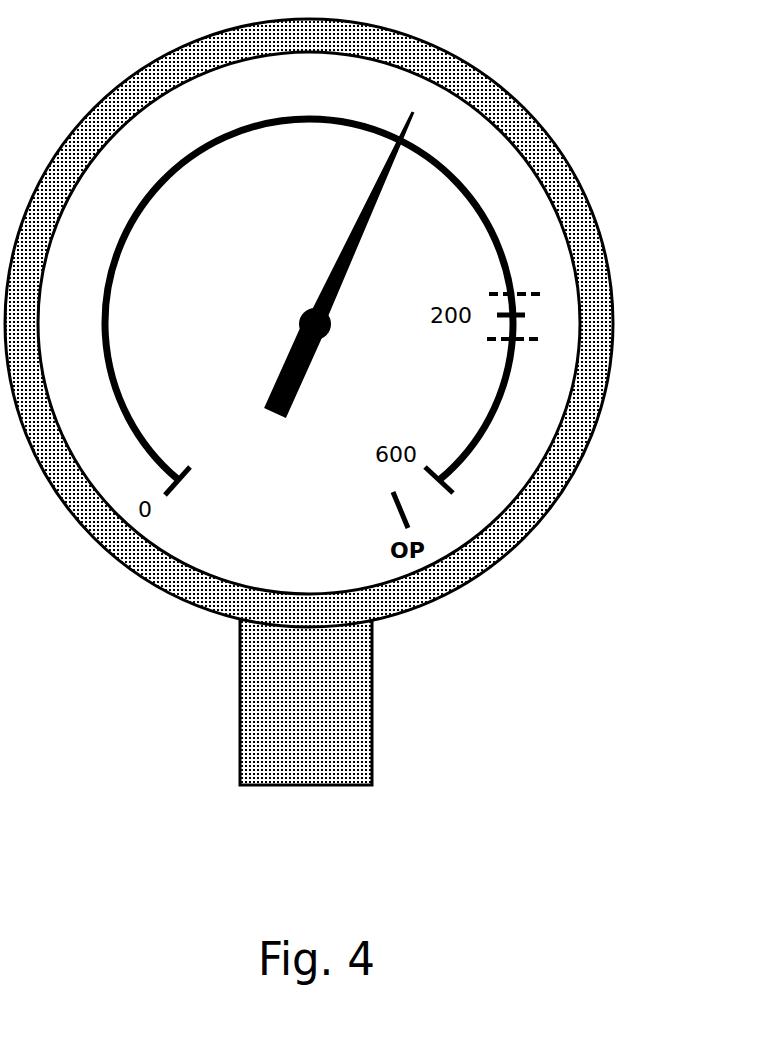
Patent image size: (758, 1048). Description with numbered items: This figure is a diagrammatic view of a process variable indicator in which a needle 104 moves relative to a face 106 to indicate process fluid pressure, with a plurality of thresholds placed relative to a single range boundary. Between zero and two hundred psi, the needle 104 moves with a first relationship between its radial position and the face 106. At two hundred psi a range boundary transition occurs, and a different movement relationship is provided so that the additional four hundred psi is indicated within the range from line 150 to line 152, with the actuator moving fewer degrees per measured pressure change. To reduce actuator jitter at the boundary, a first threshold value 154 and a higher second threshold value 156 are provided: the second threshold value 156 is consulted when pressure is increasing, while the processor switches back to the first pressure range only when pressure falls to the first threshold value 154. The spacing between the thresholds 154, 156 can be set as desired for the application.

The needle 104 is at (347, 240).
The face 106 is at (227, 530).
The line 150 is at (523, 317).
The line 152 is at (447, 478).
The first threshold value 154 is at (522, 288).
The second threshold value 156 is at (528, 342).